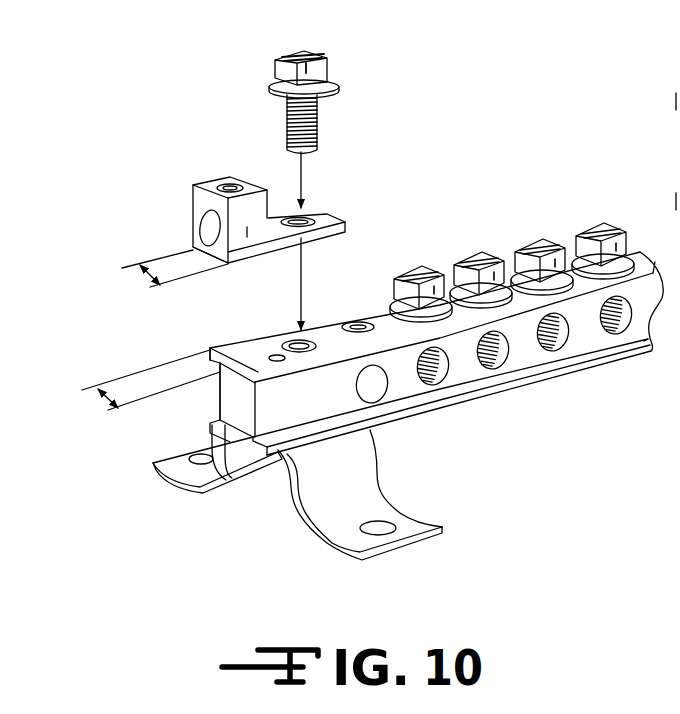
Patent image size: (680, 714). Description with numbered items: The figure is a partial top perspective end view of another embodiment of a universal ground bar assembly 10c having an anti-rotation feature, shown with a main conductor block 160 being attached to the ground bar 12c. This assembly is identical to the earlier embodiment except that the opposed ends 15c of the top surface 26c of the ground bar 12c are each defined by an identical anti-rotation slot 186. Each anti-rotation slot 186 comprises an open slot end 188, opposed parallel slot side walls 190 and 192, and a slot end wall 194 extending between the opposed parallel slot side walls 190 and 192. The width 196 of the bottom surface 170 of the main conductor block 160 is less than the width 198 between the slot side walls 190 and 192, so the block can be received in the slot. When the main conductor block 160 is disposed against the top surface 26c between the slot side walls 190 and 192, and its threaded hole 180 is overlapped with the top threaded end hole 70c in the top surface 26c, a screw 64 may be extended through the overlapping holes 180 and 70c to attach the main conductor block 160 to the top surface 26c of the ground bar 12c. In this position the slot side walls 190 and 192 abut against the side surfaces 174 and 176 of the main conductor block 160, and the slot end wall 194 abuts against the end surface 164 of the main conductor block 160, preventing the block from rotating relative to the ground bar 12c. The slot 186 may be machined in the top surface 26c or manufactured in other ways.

The screw 64 is at (328, 57).
The side surface of the main conductor block 176 is at (196, 191).
The main conductor block 160 is at (192, 213).
The side surface of the main conductor block 174 is at (248, 217).
The threaded hole 180 is at (285, 210).
The end surface of the main conductor block 164 is at (318, 210).
The slot end wall 194 is at (335, 320).
The top surface 26c is at (337, 318).
The ground bar 12c is at (364, 320).
The universal ground bar assembly 10c is at (452, 215).
The top threaded end hole 70c is at (318, 317).
The slot side wall 190 is at (262, 326).
The bottom surface of the main conductor block 170 is at (245, 262).
The anti-rotation slot 186 is at (247, 333).
The opposed end of the top surface 15c is at (217, 350).
The width of the bottom surface 196 is at (142, 287).
The width between the slot side walls 198 is at (105, 410).
The open slot end 188 is at (218, 367).
The slot side wall 192 is at (291, 362).